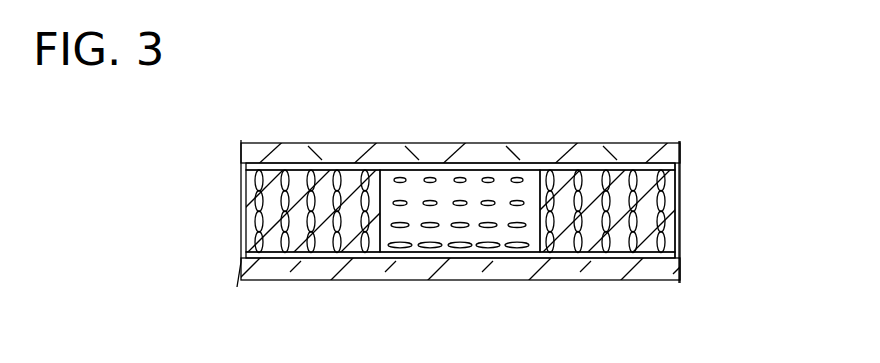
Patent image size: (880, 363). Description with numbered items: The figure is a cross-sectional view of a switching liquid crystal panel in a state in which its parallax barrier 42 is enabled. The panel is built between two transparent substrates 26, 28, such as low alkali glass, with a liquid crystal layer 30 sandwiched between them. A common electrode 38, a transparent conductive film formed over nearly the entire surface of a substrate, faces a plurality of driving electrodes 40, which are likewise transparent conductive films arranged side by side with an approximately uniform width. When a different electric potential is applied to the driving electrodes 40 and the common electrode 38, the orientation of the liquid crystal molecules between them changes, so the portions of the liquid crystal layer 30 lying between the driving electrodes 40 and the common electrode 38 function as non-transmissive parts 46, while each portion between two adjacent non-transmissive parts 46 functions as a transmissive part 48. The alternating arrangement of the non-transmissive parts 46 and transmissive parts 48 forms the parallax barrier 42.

The substrate 26 is at (578, 262).
The substrate 28 is at (640, 153).
The liquid crystal layer 30 is at (441, 176).
The common electrode 38 is at (330, 167).
The driving electrodes 40 is at (330, 257).
The parallax barrier 42 is at (684, 216).
The non-transmissive parts 46 is at (252, 192).
The transmissive part 48 is at (508, 180).